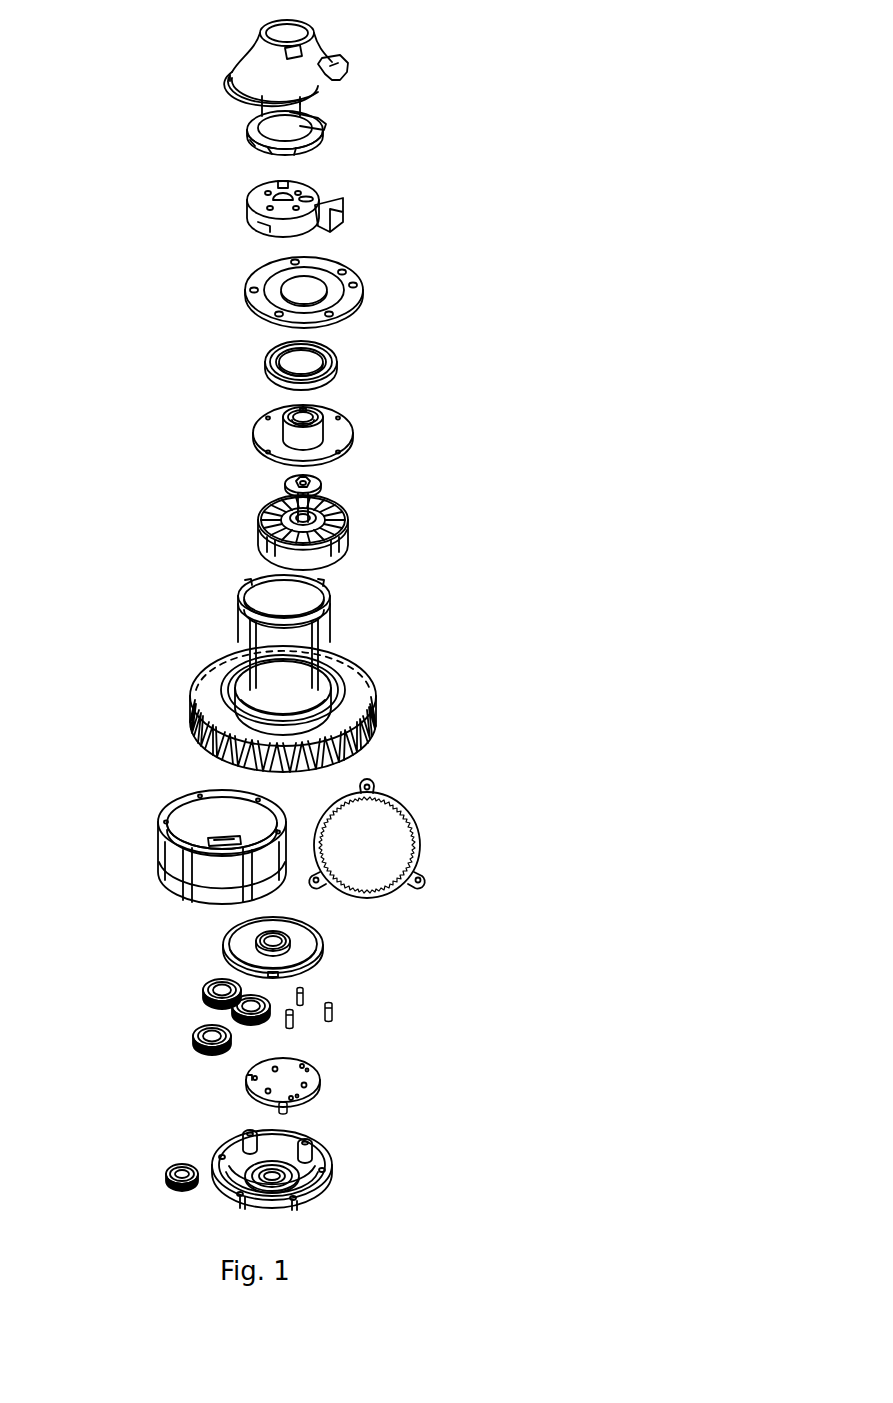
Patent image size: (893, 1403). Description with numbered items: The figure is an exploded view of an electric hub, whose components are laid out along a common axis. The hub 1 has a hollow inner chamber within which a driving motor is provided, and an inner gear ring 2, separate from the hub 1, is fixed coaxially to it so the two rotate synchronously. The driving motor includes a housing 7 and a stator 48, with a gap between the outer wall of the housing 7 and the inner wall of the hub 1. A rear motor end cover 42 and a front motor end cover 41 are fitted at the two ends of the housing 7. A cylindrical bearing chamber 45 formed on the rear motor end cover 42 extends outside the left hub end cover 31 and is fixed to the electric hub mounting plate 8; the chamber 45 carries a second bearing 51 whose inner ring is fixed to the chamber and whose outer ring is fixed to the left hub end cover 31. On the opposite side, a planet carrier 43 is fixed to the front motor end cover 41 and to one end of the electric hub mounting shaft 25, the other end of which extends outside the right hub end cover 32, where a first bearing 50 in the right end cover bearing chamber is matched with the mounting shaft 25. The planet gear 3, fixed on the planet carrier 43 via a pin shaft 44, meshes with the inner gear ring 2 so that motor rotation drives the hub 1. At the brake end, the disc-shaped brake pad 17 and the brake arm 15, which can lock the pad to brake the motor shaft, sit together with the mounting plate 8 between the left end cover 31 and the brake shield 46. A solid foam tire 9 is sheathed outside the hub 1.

The brake shield 46 is at (348, 52).
The brake arm 15 is at (322, 124).
The electric hub mounting plate 8 is at (332, 202).
The left hub end cover 31 is at (362, 302).
The second bearing 51 is at (340, 362).
The rear motor end cover 42 is at (318, 435).
The cylindrical bearing chamber 45 is at (283, 422).
The brake pad 17 is at (290, 489).
The stator 48 is at (350, 542).
The housing 7 is at (330, 606).
The tire 9 is at (378, 690).
The hub 1 is at (165, 862).
The inner gear ring 2 is at (422, 838).
The front motor end cover 41 is at (228, 947).
The planet gear 3 is at (205, 1005).
The pin shaft 44 is at (338, 1012).
The planet carrier 43 is at (318, 1083).
The electric hub mounting shaft 25 is at (277, 1112).
The right hub end cover 32 is at (335, 1168).
The first bearing 50 is at (168, 1178).